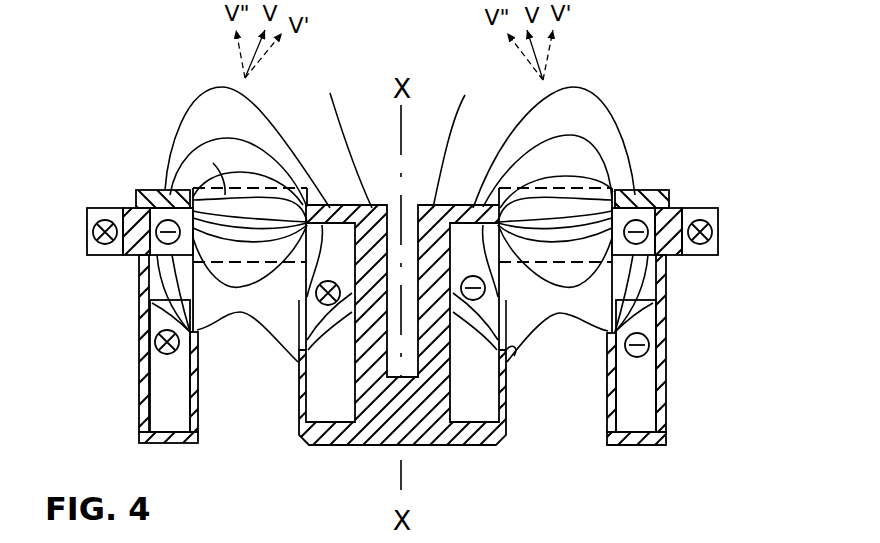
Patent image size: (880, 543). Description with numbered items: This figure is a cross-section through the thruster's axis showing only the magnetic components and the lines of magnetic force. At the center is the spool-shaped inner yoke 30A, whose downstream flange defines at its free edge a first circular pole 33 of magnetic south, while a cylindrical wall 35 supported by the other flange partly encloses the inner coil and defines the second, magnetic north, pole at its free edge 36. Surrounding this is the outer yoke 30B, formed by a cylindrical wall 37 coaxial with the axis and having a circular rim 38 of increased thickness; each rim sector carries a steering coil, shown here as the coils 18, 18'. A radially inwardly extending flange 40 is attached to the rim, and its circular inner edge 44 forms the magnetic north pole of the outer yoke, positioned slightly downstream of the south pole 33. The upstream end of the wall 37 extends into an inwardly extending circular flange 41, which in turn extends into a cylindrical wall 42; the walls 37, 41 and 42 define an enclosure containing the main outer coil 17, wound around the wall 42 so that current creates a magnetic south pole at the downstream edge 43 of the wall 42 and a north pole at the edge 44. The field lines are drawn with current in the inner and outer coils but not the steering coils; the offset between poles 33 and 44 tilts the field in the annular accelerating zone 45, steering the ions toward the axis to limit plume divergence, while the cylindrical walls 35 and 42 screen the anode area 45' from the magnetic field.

The main outer coil 17 is at (648, 420).
The steering coil 18 is at (728, 231).
The steering coil 18' is at (82, 235).
The inner yoke 30A is at (452, 448).
The outer yoke 30B is at (678, 363).
The first circular pole 33 is at (517, 188).
The cylindrical wall 35 is at (506, 408).
The second pole free edge 36 is at (512, 352).
The cylindrical wall 37 is at (667, 313).
The circular rim 38 is at (682, 206).
The flange 40 is at (665, 190).
The inwardly extending circular flange 41 is at (655, 448).
The cylindrical wall 42 is at (607, 437).
The downstream edge 43 is at (598, 326).
The inner edge 44 is at (600, 188).
The annular accelerating zone 45 is at (226, 147).
The anode area 45' is at (247, 401).